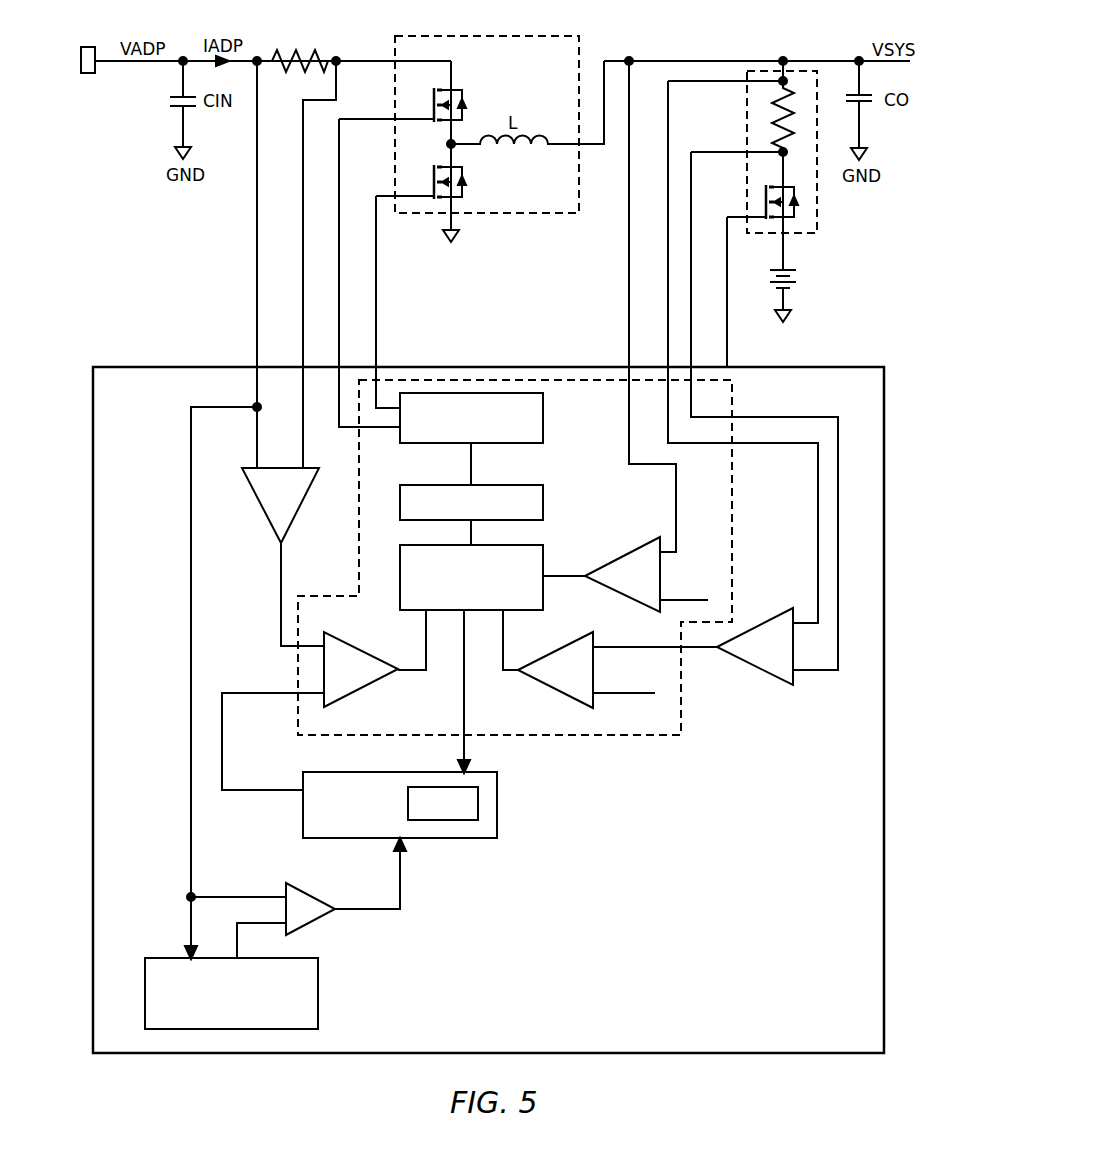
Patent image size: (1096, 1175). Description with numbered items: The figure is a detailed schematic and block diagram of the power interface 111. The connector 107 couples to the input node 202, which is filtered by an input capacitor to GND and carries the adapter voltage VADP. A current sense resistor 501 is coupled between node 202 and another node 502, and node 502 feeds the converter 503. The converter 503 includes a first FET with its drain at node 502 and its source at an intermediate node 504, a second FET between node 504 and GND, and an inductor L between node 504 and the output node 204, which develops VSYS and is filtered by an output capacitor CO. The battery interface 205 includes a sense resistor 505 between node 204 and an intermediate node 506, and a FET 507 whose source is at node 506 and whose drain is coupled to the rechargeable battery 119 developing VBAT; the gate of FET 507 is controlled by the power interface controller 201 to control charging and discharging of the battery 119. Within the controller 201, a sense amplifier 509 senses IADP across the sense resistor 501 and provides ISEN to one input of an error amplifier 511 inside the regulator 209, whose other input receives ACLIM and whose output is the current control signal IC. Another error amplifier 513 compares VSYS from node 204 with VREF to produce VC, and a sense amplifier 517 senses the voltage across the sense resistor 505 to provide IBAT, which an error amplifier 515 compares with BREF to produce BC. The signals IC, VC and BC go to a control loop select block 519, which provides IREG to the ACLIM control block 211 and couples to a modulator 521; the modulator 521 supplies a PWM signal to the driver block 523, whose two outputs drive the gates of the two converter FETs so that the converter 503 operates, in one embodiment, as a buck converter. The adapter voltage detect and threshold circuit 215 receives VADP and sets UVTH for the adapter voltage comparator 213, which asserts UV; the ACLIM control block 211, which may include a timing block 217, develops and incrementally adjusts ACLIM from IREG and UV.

The connector 107 is at (90, 47).
The input node 202 is at (135, 64).
The current sense resistor 501 is at (290, 50).
The node 502 is at (336, 56).
The converter 503 is at (487, 152).
The intermediate node 504 is at (455, 147).
The sense resistor 505 is at (770, 117).
The intermediate node 506 is at (770, 146).
The FET 507 is at (762, 195).
The output node 204 is at (859, 58).
The battery interface 205 is at (820, 200).
The rechargeable battery 119 is at (797, 276).
The power interface 111 is at (149, 253).
The power interface controller 201 is at (502, 689).
The regulator 209 is at (502, 380).
The sense amplifier 509 is at (257, 674).
The error amplifier 511 is at (310, 711).
The error amplifier 513 is at (648, 574).
The error amplifier 515 is at (586, 670).
The sense amplifier 517 is at (755, 646).
The control loop select block 519 is at (543, 553).
The modulator 521 is at (543, 503).
The driver block 523 is at (543, 418).
The ACLIM control block 211 is at (303, 812).
The adapter voltage comparator 213 is at (303, 886).
The adapter voltage detect and threshold circuit 215 is at (318, 988).
The timing block 217 is at (438, 820).